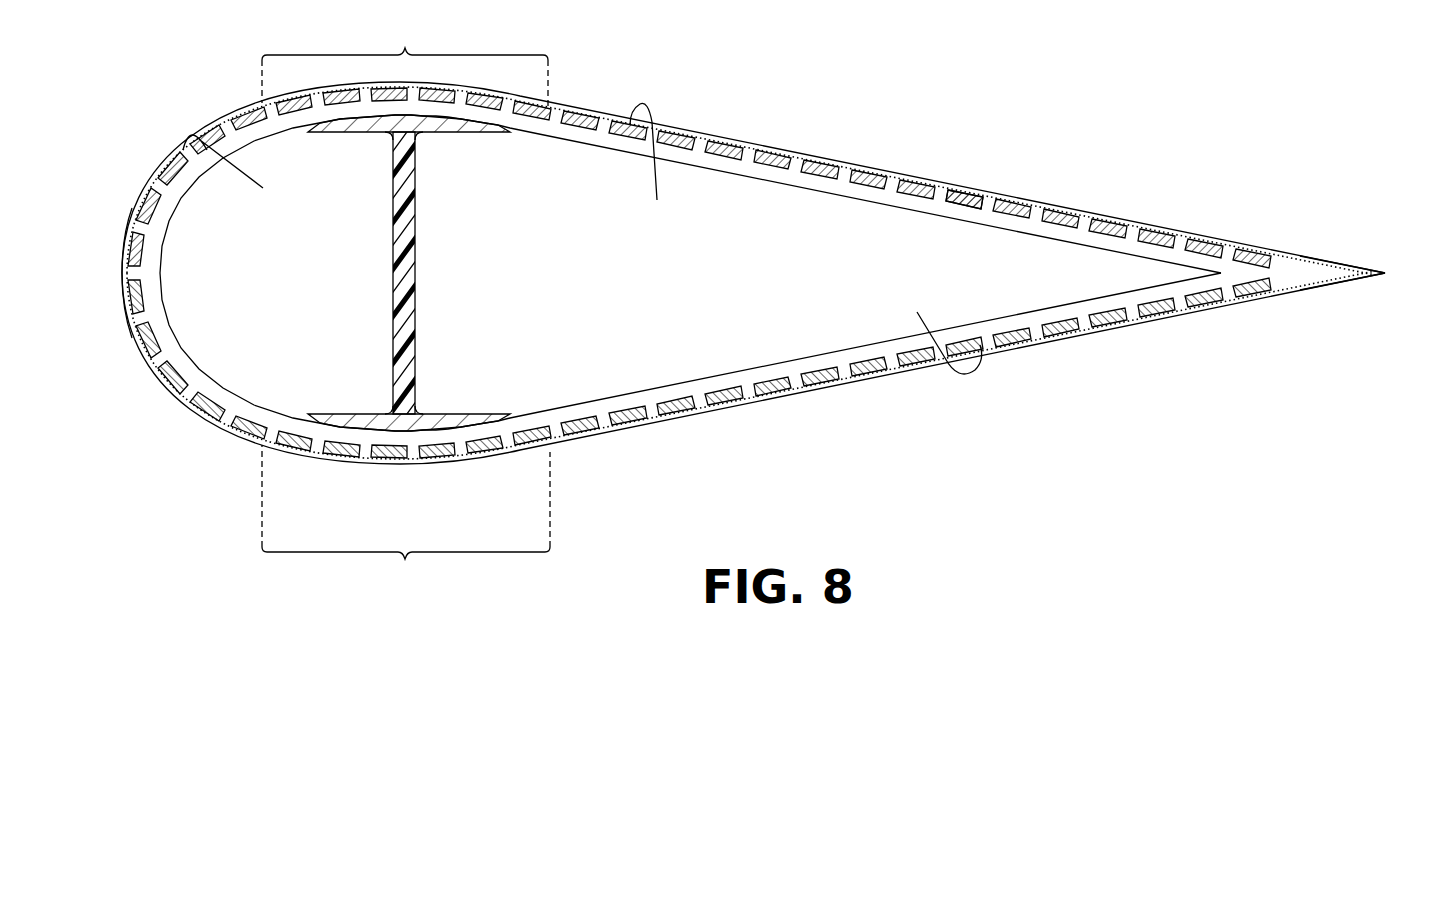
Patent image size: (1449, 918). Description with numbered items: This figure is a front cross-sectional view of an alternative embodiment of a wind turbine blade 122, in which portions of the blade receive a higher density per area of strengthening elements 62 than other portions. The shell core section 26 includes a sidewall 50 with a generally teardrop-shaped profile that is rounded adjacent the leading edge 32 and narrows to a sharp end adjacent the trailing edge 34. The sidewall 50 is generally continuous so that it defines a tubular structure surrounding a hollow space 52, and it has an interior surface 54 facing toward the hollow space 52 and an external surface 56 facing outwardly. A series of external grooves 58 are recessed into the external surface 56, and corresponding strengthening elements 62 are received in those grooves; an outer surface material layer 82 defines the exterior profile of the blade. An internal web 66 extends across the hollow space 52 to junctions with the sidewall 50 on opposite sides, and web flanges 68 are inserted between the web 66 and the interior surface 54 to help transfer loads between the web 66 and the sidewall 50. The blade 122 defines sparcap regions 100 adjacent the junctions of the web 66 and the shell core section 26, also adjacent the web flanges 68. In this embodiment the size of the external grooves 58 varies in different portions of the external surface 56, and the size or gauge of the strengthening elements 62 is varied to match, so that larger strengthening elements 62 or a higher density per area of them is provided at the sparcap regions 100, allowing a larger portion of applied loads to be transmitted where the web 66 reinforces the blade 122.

The wind turbine blade 122 is at (186, 77).
The sparcap regions 100 is at (406, 304).
The external surface 56 is at (607, 115).
The strengthening elements 62 is at (770, 150).
The outer surface material layer 82 is at (948, 192).
The external grooves 58 is at (582, 238).
The web flanges 68 is at (480, 130).
The internal web 66 is at (412, 260).
The leading edge 32 is at (117, 278).
The sidewall 50 is at (827, 187).
The shell core section 26 is at (955, 221).
The trailing edge 34 is at (1390, 274).
The hollow space 52 is at (236, 360).
The interior surface 54 is at (660, 388).